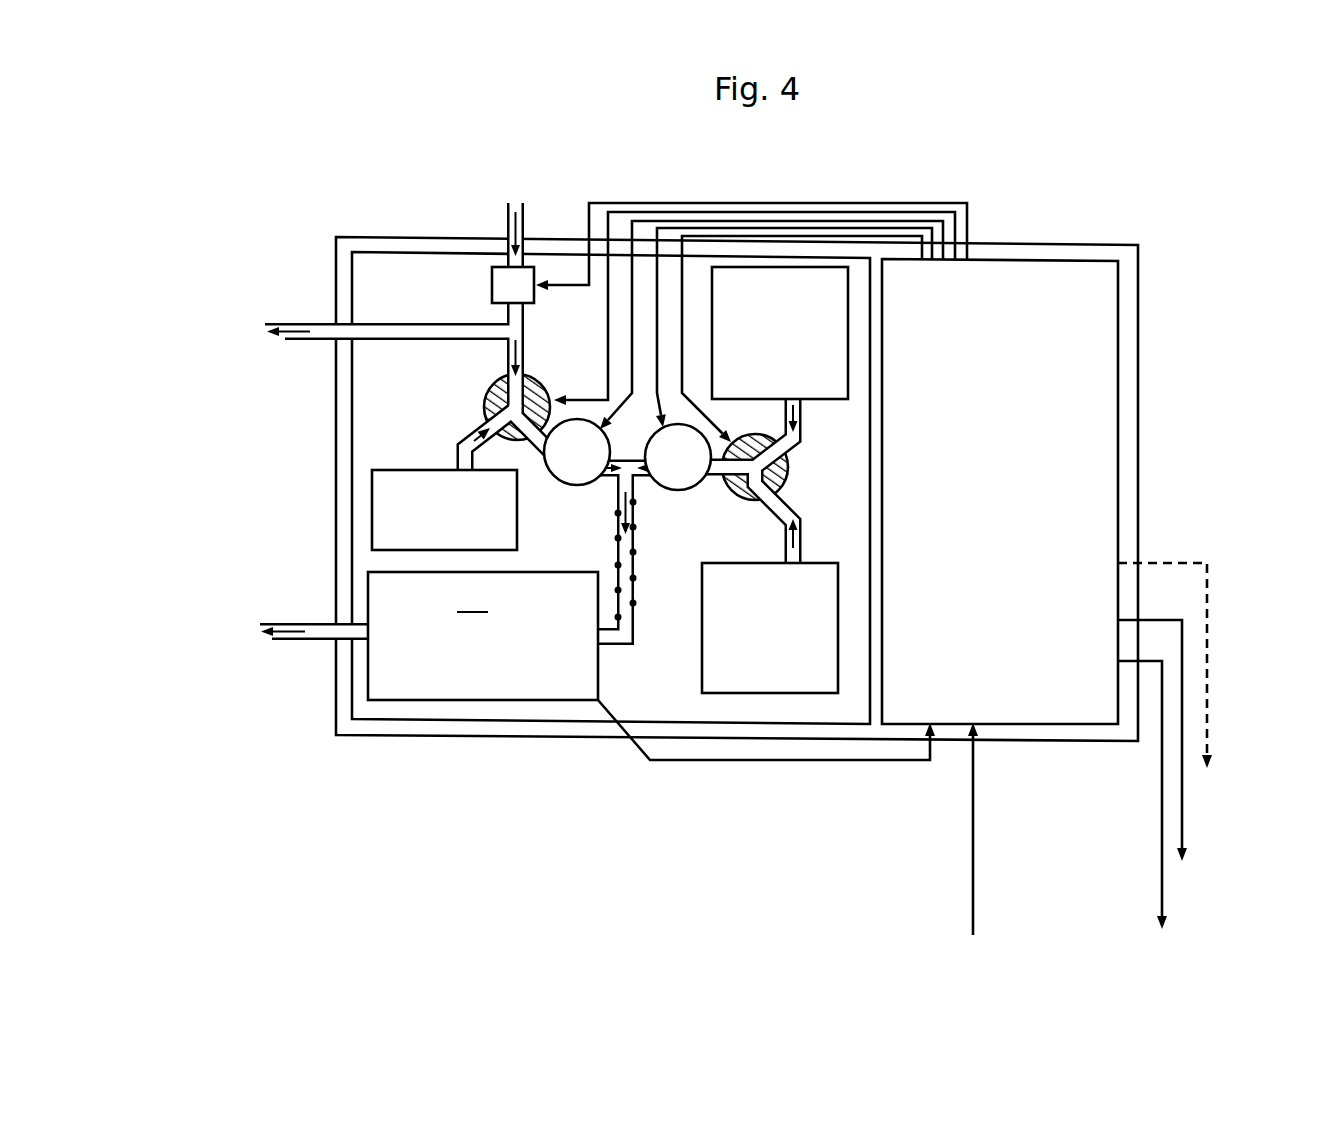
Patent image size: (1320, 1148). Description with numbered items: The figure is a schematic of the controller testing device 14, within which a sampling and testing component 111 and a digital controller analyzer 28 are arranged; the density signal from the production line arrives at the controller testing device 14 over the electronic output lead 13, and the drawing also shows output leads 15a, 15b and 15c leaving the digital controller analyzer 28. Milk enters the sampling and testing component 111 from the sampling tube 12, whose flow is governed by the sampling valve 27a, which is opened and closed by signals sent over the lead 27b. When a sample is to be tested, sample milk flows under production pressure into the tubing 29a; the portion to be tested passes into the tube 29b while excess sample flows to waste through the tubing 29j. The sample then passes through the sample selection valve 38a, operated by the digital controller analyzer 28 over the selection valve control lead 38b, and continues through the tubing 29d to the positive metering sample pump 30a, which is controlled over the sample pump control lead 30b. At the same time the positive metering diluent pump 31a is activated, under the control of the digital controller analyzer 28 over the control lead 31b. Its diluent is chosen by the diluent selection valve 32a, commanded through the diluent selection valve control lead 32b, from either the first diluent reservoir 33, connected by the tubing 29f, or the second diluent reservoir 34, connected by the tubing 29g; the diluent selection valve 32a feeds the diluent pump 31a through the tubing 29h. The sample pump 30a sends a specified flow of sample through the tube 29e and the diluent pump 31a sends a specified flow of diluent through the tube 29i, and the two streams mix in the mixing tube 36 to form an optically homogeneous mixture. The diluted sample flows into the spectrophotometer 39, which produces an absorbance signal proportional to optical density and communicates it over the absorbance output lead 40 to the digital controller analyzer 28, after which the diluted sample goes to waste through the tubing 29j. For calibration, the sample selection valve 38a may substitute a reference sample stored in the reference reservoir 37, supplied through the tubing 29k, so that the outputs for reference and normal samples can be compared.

The sampling and testing component 111 is at (367, 252).
The controller testing device 14 is at (1138, 305).
The digital controller analyzer 28 is at (1118, 468).
The sampling tube 12 is at (508, 220).
The sampling valve 27a is at (492, 285).
The lead 27b is at (588, 203).
The sample selection valve 38a is at (488, 392).
The selection valve control lead 38b is at (607, 235).
The tubing 29a is at (506, 322).
The tube 29b is at (506, 352).
The tubing 29d is at (547, 470).
The tube 29e is at (610, 490).
The tubing 29f is at (802, 428).
The tubing 29g is at (803, 528).
The tubing 29h is at (718, 482).
The tube 29i is at (648, 505).
The tubing 29j is at (320, 322).
The reference conduit 29k is at (460, 442).
The positive metering sample pump 30a is at (570, 490).
The sample pump control lead 30b is at (630, 318).
The positive metering diluent pump 31a is at (682, 492).
The displacement pump control line 31b is at (655, 350).
The diluent selection valve 32a is at (788, 472).
The diluent selection valve control lead 32b is at (680, 370).
The first diluent reservoir 33 is at (848, 365).
The second diluent reservoir 34 is at (702, 668).
The mixing tube 36 is at (632, 585).
The reference reservoir 37 is at (372, 482).
The spectrophotometer 39 is at (483, 636).
The absorbance output lead 40 is at (758, 762).
The electronic output lead 13 is at (975, 790).
The output signal line 15a is at (1162, 895).
The output signal line 15b is at (1182, 815).
The optional output signal line 15c is at (1207, 705).